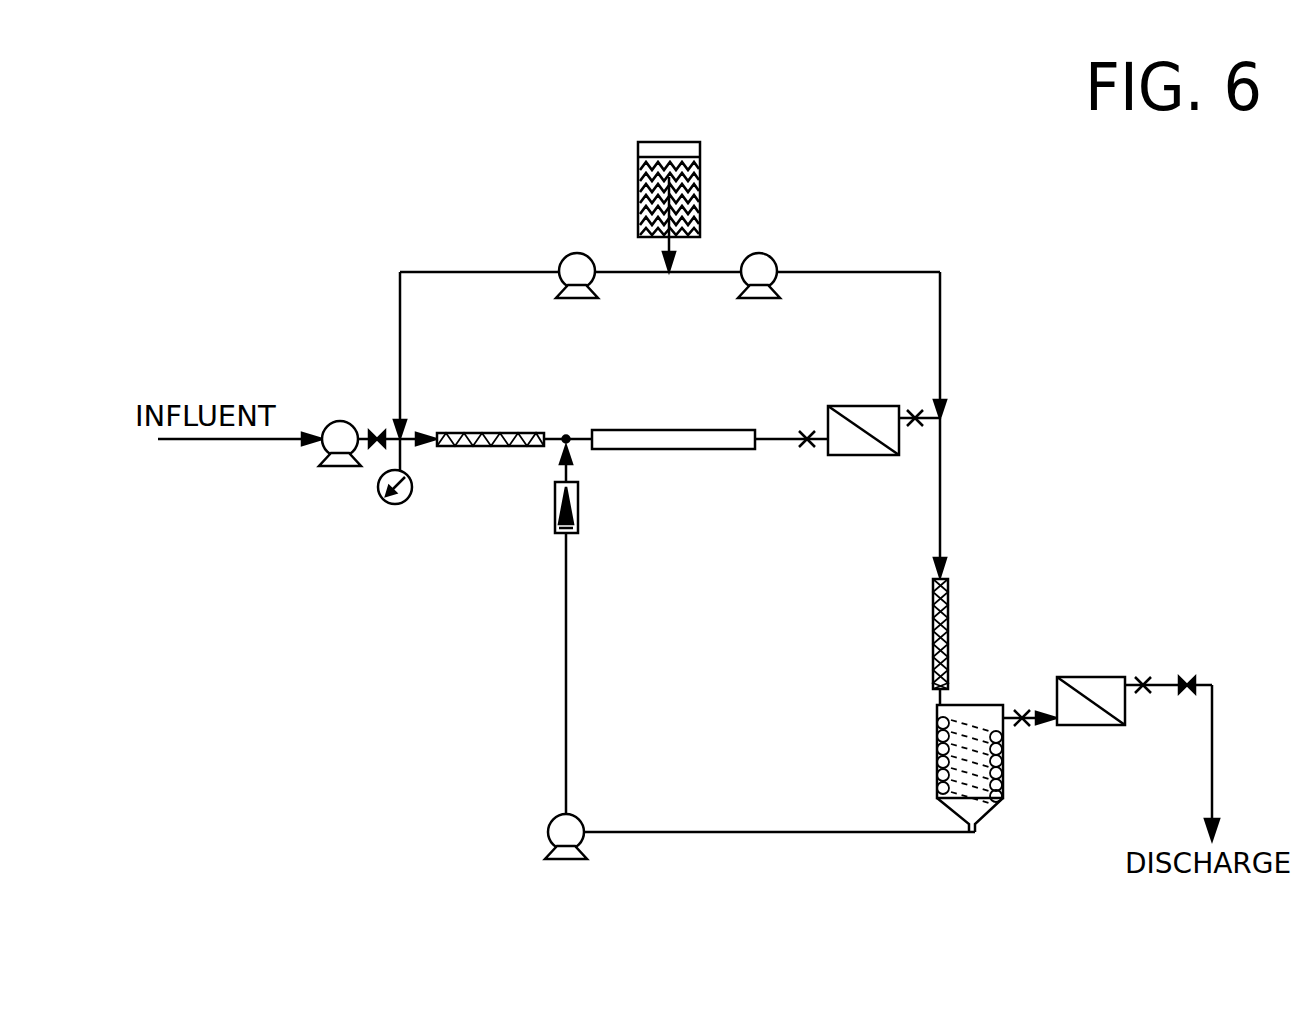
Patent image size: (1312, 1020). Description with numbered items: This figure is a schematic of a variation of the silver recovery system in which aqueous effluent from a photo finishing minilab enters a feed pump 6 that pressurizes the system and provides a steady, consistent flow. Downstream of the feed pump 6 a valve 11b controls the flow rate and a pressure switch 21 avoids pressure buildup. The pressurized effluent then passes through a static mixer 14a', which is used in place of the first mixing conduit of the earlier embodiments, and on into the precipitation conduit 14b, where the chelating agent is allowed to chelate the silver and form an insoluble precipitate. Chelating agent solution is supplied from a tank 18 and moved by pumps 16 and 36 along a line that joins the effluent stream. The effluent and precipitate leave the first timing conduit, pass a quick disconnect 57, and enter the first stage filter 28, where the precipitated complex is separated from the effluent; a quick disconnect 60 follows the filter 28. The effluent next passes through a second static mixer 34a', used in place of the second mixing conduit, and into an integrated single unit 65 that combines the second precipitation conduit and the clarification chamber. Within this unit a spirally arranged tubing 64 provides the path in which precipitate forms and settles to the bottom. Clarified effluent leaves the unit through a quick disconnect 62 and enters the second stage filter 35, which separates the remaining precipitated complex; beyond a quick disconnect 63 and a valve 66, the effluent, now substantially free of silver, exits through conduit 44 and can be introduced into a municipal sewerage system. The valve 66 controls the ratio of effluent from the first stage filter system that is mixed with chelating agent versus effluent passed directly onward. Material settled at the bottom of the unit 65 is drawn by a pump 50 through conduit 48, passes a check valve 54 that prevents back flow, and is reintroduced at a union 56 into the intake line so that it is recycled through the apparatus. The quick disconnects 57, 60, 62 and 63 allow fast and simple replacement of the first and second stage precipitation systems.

The feed pump 6 is at (323, 474).
The valve 11b is at (377, 426).
The static mixer 14a' is at (483, 407).
The precipitation conduit 14b is at (673, 413).
The pump 16 is at (572, 300).
The chelating agent supply tank 18 is at (652, 140).
The pressure switch 21 is at (417, 513).
The filter 28 is at (850, 455).
The static mixer 34a' is at (989, 634).
The filter 35 is at (1082, 728).
The pump 36 is at (760, 300).
The conduit 44 is at (1215, 778).
The conduit 48 is at (713, 838).
The pump 50 is at (568, 862).
The check valve 54 is at (578, 503).
The union 56 is at (566, 433).
The quick disconnect 57 is at (805, 450).
The quick disconnect 60 is at (873, 388).
The quick disconnect 62 is at (1023, 710).
The quick disconnect 63 is at (1143, 675).
The spirally arranged tubing 64 is at (899, 754).
The single unit 65 is at (899, 810).
The valve 66 is at (1185, 700).